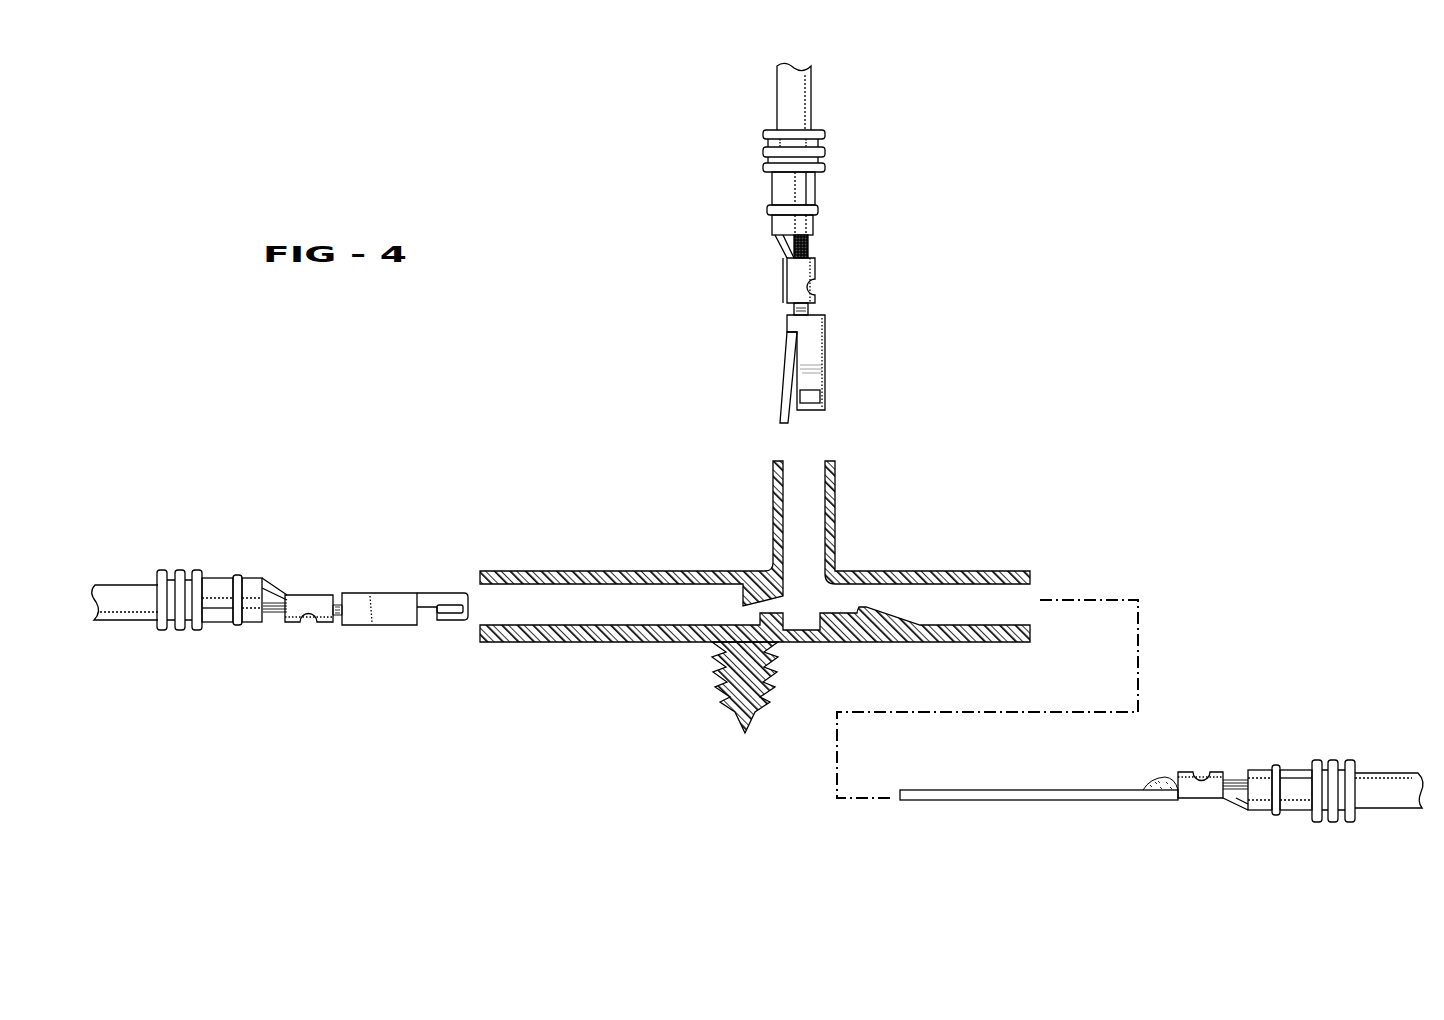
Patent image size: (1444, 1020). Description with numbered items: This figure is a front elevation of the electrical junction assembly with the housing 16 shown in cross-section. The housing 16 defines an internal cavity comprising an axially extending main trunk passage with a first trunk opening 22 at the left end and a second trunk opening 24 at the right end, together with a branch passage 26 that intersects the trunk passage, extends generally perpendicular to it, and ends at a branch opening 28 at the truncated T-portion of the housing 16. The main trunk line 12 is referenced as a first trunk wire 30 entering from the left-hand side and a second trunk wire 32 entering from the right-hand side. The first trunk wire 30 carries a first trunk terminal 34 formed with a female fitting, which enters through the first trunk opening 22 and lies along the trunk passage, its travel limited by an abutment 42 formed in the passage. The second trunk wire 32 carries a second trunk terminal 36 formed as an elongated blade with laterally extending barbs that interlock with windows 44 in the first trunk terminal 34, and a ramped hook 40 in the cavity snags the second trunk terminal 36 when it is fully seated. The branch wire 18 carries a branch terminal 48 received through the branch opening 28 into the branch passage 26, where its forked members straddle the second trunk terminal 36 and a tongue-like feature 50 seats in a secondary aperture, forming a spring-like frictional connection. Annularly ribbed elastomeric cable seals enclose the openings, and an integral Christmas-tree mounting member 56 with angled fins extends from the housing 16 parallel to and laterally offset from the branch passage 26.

The main trunk line 12 is at (1420, 774).
The housing 16 is at (809, 599).
The branch wire 18 is at (786, 103).
The first trunk opening 22 is at (538, 603).
The second trunk opening 24 is at (1012, 590).
The branch passage 26 is at (807, 502).
The branch opening 28 is at (826, 470).
The first trunk wire portion 30 is at (118, 595).
The second trunk wire portion 32 is at (1369, 810).
The first trunk terminal 34 is at (370, 626).
The second trunk terminal 36 is at (980, 802).
The hook 40 is at (888, 615).
The abutment 42 is at (743, 598).
The windows 44 is at (447, 604).
The branch terminal 48 is at (815, 340).
The tongue-like feature 50 is at (781, 403).
The mounting member 56 is at (716, 705).